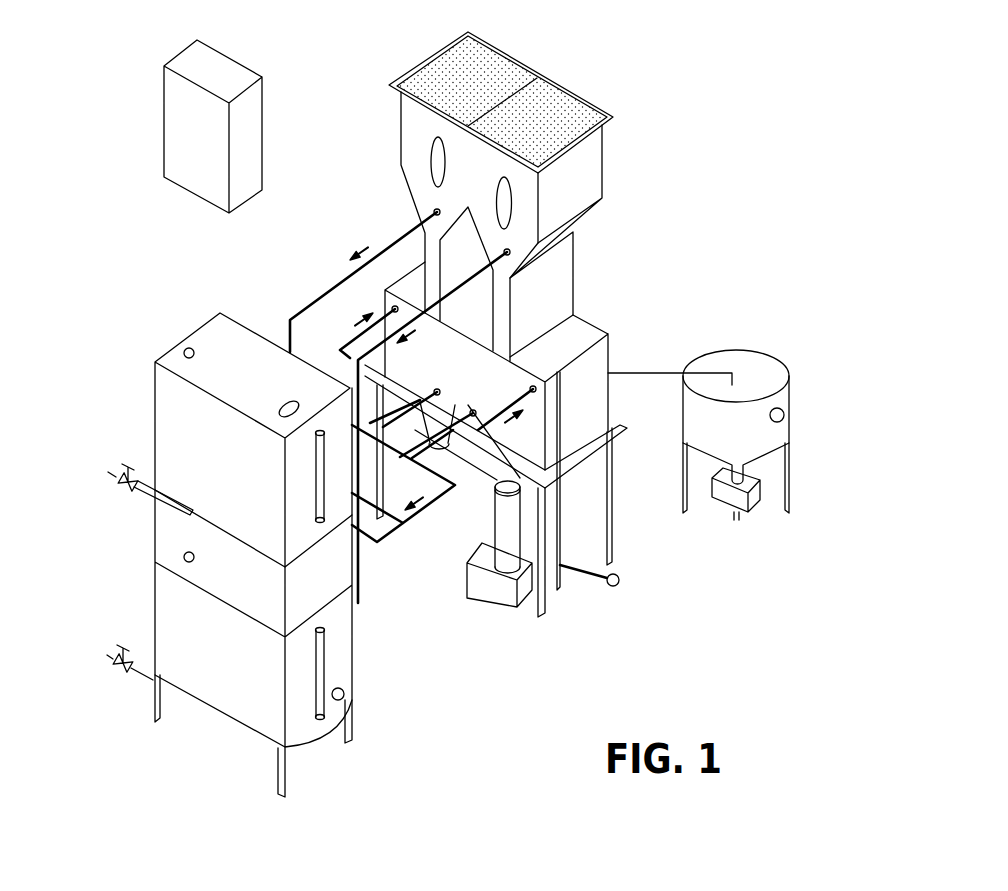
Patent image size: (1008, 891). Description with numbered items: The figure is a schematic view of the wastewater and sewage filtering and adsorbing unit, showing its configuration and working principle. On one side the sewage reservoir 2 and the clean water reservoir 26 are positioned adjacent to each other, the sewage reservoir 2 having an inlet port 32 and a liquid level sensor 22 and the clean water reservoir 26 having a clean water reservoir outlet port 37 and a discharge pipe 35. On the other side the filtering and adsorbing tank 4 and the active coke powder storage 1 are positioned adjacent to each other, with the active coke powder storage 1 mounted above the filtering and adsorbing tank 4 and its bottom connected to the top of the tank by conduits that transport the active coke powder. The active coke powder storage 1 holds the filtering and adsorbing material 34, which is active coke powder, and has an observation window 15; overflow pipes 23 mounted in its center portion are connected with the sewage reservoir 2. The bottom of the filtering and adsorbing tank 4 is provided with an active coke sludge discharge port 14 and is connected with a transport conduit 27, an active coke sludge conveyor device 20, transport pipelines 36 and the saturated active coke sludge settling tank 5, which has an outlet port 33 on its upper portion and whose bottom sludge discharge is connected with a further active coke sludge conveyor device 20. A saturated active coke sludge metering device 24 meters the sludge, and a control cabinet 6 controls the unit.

The active coke powder storage 1 is at (587, 197).
The sewage reservoir 2 is at (180, 410).
The filtering and adsorbing tank 4 is at (593, 362).
The saturated active coke sludge settling tank 5 is at (790, 430).
The control cabinet 6 is at (180, 140).
The active coke sludge discharge port 14 is at (497, 478).
The observation window 15 is at (432, 160).
The active coke sludge conveyor device 20 is at (478, 580).
The liquid level sensor 22 is at (185, 350).
The overflow pipes 23 is at (320, 298).
The saturated active coke sludge metering device 24 is at (618, 577).
The clean water reservoir 26 is at (165, 648).
The transport conduit 27 is at (508, 527).
The inlet port 32 is at (283, 403).
The outlet port 33 is at (783, 410).
The filtering and adsorbing material 34 is at (550, 113).
The discharge pipe 35 is at (153, 680).
The transport pipelines 36 is at (712, 372).
The clean water reservoir outlet port 37 is at (348, 703).